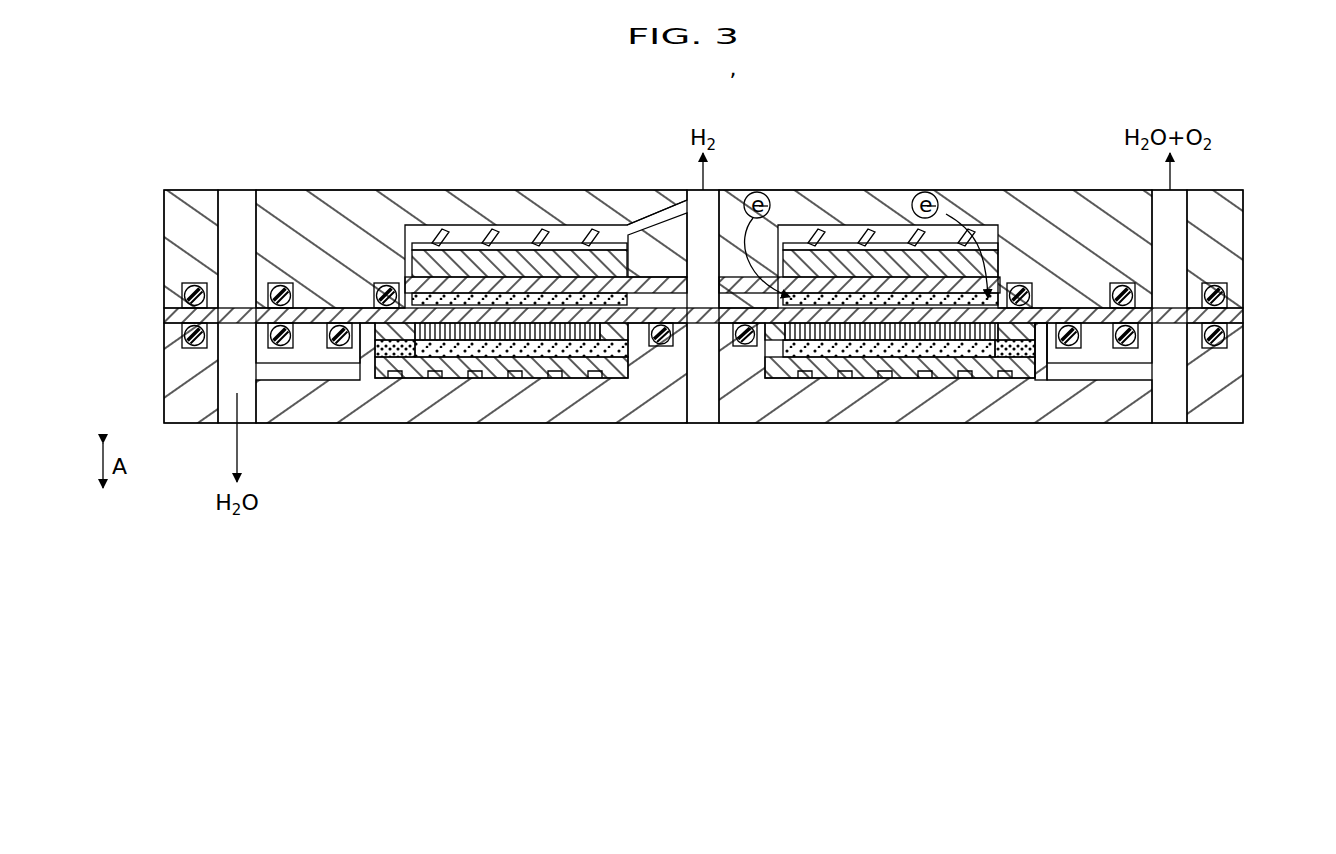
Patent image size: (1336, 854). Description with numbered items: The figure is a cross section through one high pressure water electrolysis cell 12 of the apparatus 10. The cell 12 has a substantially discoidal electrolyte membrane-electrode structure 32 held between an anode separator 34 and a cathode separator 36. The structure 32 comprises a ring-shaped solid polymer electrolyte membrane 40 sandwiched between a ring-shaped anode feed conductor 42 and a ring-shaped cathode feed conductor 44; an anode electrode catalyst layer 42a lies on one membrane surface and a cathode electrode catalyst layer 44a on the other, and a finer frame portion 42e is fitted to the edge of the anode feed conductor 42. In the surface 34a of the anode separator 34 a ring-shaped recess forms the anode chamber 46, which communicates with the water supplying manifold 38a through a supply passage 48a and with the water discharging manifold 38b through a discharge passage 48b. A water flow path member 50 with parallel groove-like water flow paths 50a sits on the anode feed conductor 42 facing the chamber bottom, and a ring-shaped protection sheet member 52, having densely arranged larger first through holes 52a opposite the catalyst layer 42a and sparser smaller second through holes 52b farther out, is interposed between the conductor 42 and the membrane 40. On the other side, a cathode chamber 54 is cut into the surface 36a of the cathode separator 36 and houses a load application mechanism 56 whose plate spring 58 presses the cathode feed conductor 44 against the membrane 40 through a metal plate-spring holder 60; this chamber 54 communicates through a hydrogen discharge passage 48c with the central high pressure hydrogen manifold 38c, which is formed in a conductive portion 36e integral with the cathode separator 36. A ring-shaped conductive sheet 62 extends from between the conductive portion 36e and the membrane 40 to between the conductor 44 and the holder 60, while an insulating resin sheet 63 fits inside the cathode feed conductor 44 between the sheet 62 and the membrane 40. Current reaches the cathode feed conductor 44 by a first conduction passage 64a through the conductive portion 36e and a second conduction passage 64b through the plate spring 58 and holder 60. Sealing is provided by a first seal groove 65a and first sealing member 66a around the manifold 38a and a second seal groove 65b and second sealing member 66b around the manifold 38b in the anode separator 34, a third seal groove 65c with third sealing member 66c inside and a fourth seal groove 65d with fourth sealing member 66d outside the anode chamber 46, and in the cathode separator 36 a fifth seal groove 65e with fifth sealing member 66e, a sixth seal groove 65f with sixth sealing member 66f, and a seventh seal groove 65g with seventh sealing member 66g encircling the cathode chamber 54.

The water electrolysis device 10 is at (739, 80).
The high pressure water electrolysis cell 12 is at (703, 80).
The electrolyte membrane-electrode structure 32 is at (165, 316).
The anode separator 34 is at (176, 427).
The surface of the anode separator 34a is at (1086, 305).
The cathode separator 36 is at (183, 190).
The surface of the cathode separator 36a is at (1097, 368).
The conductive portion 36e is at (742, 258).
The water supplying manifold 38a is at (226, 398).
The water discharging manifold 38b is at (1157, 399).
The high pressure hydrogen manifold 38c is at (703, 424).
The solid polymer electrolyte membrane 40 is at (318, 345).
The anode feed conductor 42 is at (501, 352).
The anode electrode catalyst layer 42a is at (541, 360).
The frame portion 42e is at (396, 372).
The cathode feed conductor 44 is at (585, 300).
The cathode electrode catalyst layer 44a is at (500, 285).
The anode chamber 46 is at (622, 336).
The supply passage 48a is at (277, 380).
The discharge passage 48b is at (1127, 370).
The hydrogen discharge passage 48c is at (646, 213).
The water flow path member 50 is at (462, 382).
The water flow paths 50a is at (440, 368).
The protection sheet member 52 is at (637, 342).
The first through holes 52a is at (582, 350).
The second through holes 52b is at (388, 353).
The cathode chamber 54 is at (990, 232).
The load application mechanism 56 is at (880, 243).
The plate spring 58 is at (437, 243).
The plate-spring holder 60 is at (548, 248).
The conductive sheet 62 is at (836, 270).
The resin sheet 63 is at (670, 222).
The first conduction passage 64a is at (746, 262).
The second conduction passage 64b is at (962, 262).
The first seal groove 65a is at (188, 340).
The second seal groove 65b is at (1225, 334).
The third seal groove 65c is at (662, 346).
The fourth seal groove 65d is at (1066, 300).
The fifth seal groove 65e is at (184, 287).
The sixth seal groove 65f is at (1222, 302).
The seventh seal groove 65g is at (386, 288).
The first sealing member 66a is at (192, 352).
The second sealing member 66b is at (1228, 345).
The third sealing member 66c is at (657, 292).
The fourth sealing member 66d is at (1067, 350).
The fifth sealing member 66e is at (188, 300).
The sixth sealing member 66f is at (1226, 288).
The seventh sealing member 66g is at (373, 292).